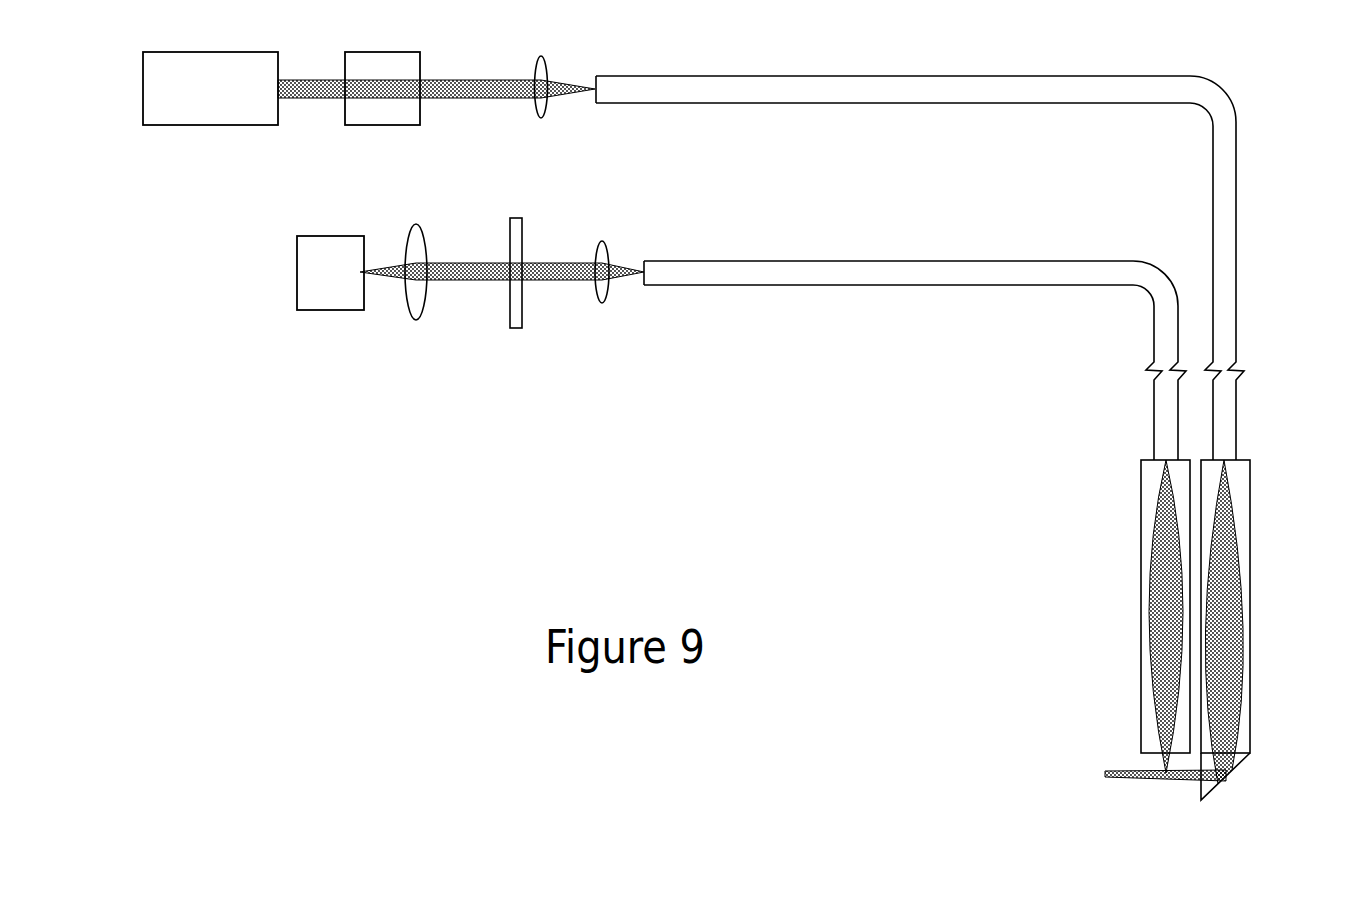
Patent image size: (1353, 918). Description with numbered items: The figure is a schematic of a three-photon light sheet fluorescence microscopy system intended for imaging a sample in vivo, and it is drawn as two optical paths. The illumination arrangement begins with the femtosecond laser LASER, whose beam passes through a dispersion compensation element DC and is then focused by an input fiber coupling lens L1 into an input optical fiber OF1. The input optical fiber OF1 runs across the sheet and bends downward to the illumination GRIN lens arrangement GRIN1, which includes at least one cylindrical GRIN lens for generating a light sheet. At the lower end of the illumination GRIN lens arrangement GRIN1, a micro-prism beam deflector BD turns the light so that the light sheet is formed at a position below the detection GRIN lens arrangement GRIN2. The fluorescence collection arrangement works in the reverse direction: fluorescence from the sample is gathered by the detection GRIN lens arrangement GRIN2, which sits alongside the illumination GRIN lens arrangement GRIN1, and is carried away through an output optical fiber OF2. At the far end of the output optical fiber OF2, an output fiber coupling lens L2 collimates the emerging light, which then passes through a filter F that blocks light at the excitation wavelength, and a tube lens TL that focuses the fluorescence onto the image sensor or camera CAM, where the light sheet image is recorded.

The femtosecond laser LASER is at (210, 88).
The dispersion compensation element DC is at (382, 70).
The input fiber coupling lens L1 is at (536, 67).
The input optical fiber OF1 is at (920, 236).
The camera CAM is at (330, 300).
The tube lens TL is at (414, 294).
The filter F is at (516, 291).
The output fiber coupling lens L2 is at (603, 304).
The output optical fiber OF2 is at (915, 360).
The illumination GRIN lens arrangement GRIN1 is at (1266, 606).
The detection GRIN lens arrangement GRIN2 is at (1123, 606).
The micro-prism beam deflector BD is at (1247, 776).